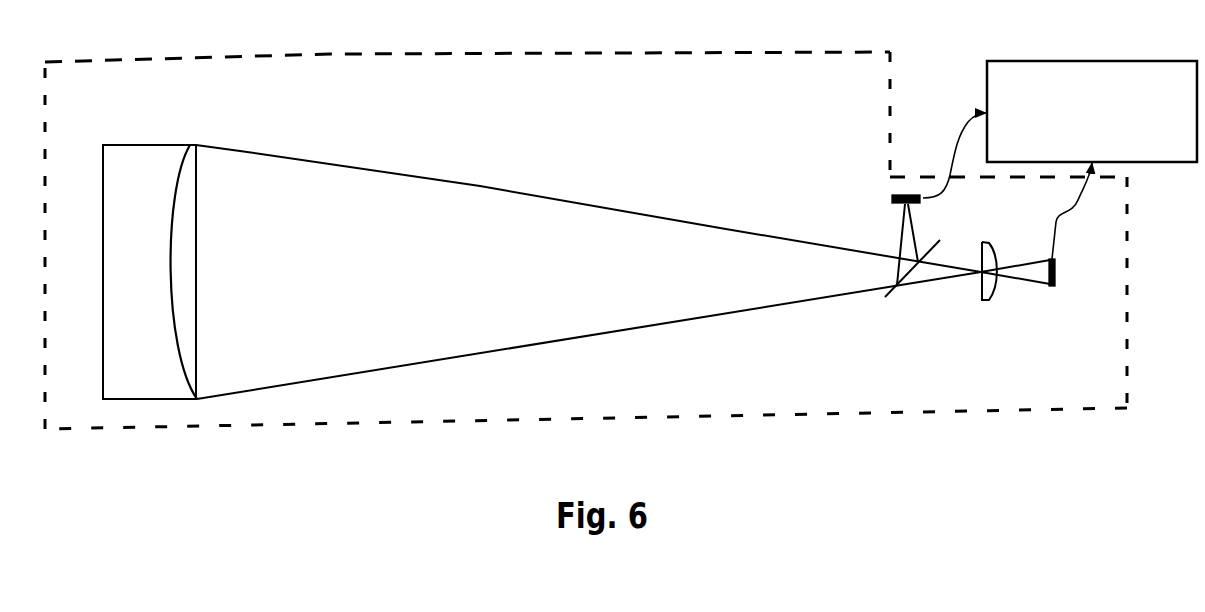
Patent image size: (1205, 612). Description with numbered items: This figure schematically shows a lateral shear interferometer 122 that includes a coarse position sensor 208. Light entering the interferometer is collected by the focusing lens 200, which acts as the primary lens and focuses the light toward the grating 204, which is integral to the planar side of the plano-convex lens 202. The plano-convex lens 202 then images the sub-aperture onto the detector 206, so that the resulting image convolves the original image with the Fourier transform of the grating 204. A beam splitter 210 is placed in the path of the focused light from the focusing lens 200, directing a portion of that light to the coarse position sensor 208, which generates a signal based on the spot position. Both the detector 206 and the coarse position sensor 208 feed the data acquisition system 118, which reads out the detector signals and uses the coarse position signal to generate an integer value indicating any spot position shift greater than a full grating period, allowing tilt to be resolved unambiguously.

The data acquisition system 118 is at (1092, 96).
The lateral shear interferometer 122 is at (358, 424).
The focusing lens 200 is at (190, 186).
The plano-convex lens 202 is at (993, 252).
The grating 204 is at (980, 291).
The detector 206 is at (1057, 289).
The coarse position sensor 208 is at (886, 193).
The beam splitter 210 is at (884, 302).